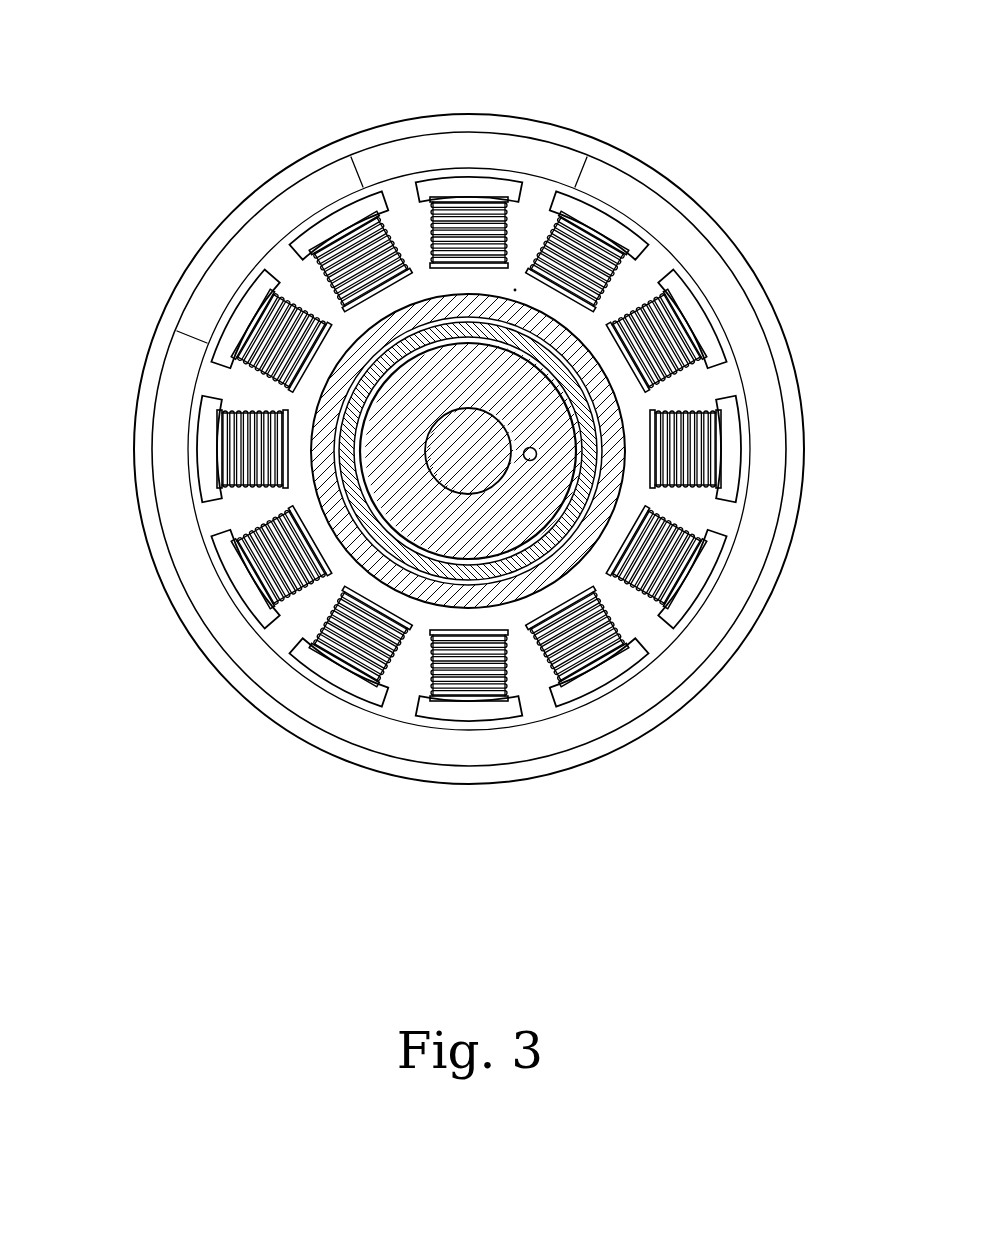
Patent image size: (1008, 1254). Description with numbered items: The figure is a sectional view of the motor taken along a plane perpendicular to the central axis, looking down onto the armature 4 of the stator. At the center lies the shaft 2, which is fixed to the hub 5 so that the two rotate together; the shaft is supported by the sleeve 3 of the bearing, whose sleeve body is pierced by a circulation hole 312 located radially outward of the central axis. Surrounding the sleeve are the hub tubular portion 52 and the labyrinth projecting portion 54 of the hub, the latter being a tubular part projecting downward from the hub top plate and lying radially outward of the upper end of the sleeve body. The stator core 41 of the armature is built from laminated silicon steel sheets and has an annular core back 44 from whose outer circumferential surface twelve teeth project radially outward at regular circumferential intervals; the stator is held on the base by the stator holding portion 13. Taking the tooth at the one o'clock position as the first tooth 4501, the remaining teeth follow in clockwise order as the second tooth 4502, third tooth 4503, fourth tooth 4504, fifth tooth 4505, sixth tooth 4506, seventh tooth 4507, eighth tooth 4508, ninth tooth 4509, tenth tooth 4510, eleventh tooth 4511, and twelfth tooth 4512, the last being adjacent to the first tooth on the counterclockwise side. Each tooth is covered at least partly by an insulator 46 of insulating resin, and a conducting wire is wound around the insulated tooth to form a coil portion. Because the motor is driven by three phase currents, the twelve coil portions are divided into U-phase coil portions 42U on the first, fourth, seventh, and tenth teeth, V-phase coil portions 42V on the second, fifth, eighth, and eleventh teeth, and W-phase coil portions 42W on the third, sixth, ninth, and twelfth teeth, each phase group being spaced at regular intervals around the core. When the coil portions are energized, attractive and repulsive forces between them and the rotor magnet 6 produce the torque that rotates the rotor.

The shaft 2 is at (447, 447).
The sleeve 3 is at (365, 520).
The armature 4 is at (461, 456).
The hub 5 is at (205, 352).
The rotor magnet 6 is at (237, 247).
The stator holding portion 13 is at (330, 415).
The stator core 41 is at (413, 190).
The U-phase coil portions 42U is at (570, 240).
The V-phase coil portions 42V is at (355, 235).
The W-phase coil portions 42W is at (482, 225).
The core back 44 is at (515, 290).
The insulator 46 is at (640, 240).
The hub tubular portion 52 is at (720, 243).
The labyrinth projecting portion 54 is at (310, 425).
The circulation hole 312 is at (535, 460).
The first tooth 4501 is at (580, 185).
The second tooth 4502 is at (700, 318).
The third tooth 4503 is at (728, 455).
The fourth tooth 4504 is at (690, 578).
The fifth tooth 4505 is at (572, 688).
The sixth tooth 4506 is at (480, 725).
The seventh tooth 4507 is at (345, 690).
The eighth tooth 4508 is at (222, 592).
The ninth tooth 4509 is at (203, 473).
The tenth tooth 4510 is at (250, 330).
The eleventh tooth 4511 is at (318, 237).
The twelfth tooth 4512 is at (455, 195).